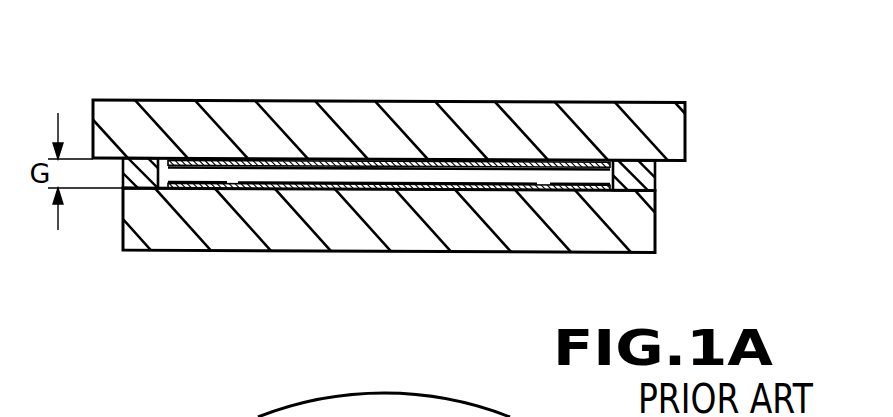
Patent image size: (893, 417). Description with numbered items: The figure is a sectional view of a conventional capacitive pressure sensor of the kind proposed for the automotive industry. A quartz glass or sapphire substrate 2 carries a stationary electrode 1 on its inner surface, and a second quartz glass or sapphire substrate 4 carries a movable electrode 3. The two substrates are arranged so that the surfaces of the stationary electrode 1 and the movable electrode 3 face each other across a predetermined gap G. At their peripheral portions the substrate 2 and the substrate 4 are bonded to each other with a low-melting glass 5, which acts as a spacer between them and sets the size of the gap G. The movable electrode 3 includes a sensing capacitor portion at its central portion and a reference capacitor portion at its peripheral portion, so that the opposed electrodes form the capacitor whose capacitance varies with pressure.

The stationary electrode 1 is at (463, 161).
The quartz glass or sapphire substrate 2 is at (663, 133).
The movable electrode 3 is at (314, 196).
The quartz glass or sapphire substrate 4 is at (630, 228).
The low-melting glass 5 is at (653, 173).